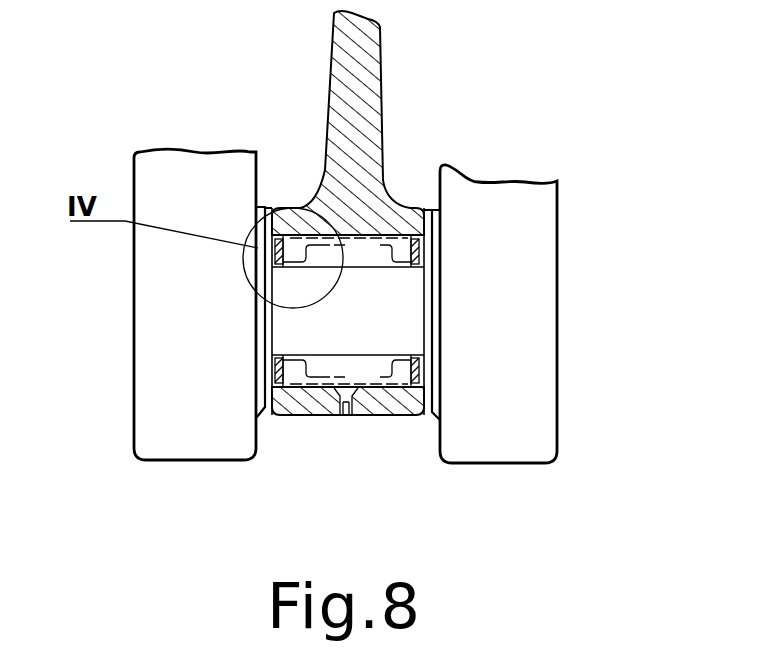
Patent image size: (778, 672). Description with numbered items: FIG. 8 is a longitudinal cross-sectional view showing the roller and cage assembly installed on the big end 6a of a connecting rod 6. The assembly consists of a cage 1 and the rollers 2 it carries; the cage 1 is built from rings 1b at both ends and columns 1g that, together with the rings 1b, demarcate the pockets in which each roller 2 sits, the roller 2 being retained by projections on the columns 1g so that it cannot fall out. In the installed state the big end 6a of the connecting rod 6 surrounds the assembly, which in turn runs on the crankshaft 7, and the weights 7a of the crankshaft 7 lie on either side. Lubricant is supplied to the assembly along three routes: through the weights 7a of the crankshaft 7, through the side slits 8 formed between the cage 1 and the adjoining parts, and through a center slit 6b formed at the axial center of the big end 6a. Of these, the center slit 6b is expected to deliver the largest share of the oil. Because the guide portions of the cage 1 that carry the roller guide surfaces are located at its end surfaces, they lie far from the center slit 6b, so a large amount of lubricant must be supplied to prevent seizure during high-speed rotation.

The cage 1 is at (426, 248).
The ring 1b is at (260, 236).
The column 1g is at (382, 417).
The roller 2 is at (378, 257).
The connecting rod 6 is at (388, 68).
The big end 6a is at (365, 417).
The center slit 6b is at (342, 417).
The crankshaft 7 is at (563, 428).
The weight 7a is at (203, 320).
The side slit 8 is at (268, 417).